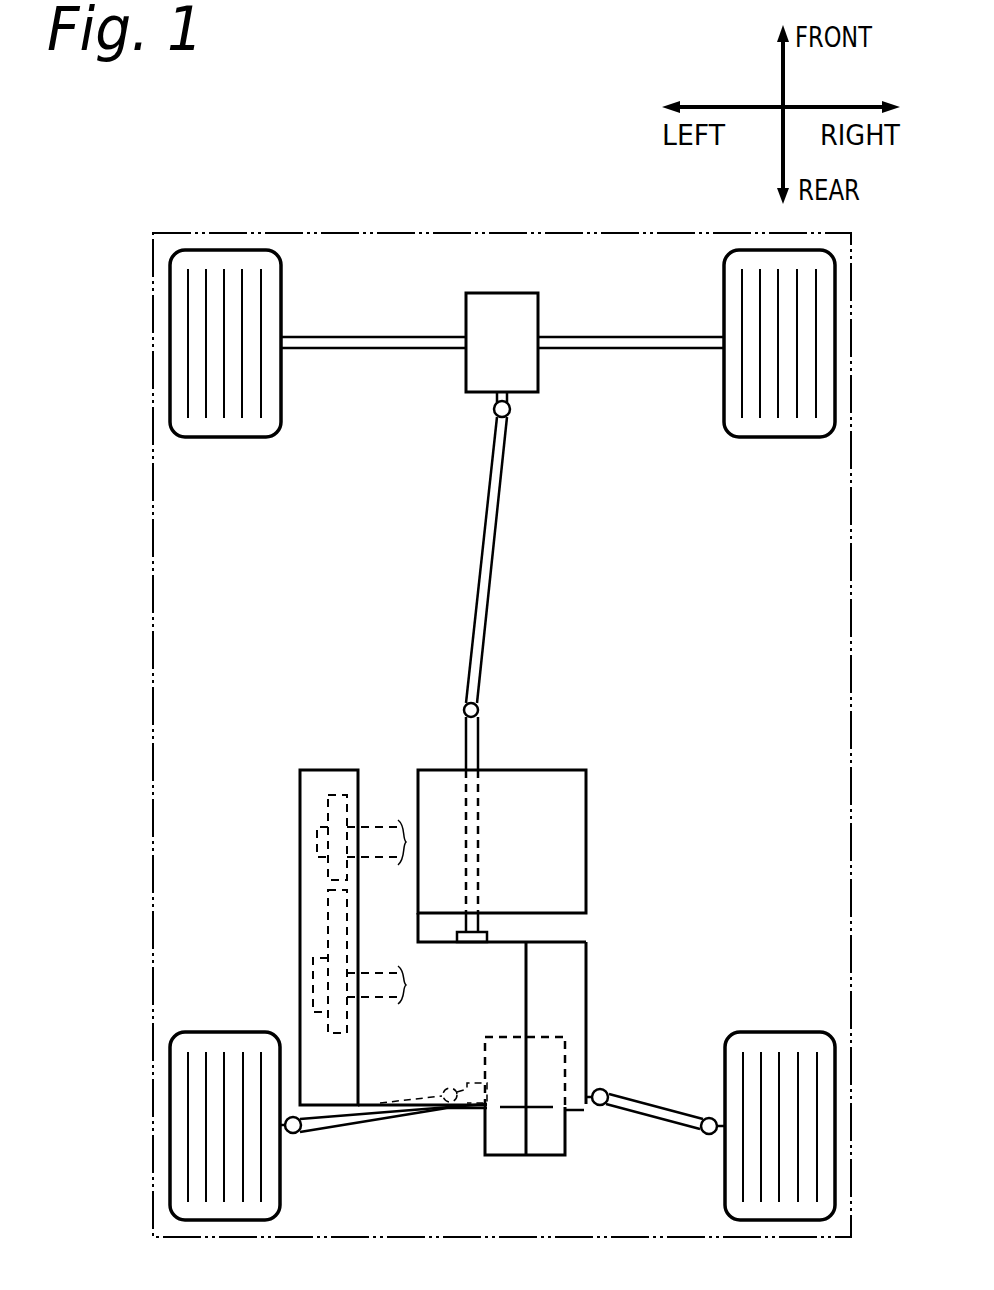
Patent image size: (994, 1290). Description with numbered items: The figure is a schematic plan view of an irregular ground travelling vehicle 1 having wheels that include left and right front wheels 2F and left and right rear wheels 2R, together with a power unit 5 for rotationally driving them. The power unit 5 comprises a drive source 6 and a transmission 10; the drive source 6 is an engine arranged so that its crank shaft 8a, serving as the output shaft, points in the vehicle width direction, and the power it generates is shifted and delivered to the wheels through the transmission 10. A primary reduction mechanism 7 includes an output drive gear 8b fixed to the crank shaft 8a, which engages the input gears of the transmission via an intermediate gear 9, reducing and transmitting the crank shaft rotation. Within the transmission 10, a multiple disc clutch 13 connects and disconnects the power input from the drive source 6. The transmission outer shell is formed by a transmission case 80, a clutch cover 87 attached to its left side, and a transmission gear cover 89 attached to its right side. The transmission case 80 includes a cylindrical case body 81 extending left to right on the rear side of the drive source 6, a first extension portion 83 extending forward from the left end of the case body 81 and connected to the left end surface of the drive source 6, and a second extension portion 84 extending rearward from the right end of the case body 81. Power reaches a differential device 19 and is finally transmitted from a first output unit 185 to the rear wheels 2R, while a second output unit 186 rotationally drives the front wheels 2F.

The irregular ground travelling vehicle 1 is at (458, 222).
The front wheels 2F is at (222, 437).
The rear wheels 2R is at (223, 1032).
The power unit 5 is at (557, 871).
The drive source 6 is at (553, 840).
The primary reduction mechanism 7 is at (298, 855).
The crank shaft 8a is at (388, 826).
The output drive gear 8b is at (338, 793).
The intermediate gear 9 is at (330, 913).
The transmission 10 is at (600, 972).
The multiple disc clutch 13 is at (320, 1030).
The differential device 19 is at (552, 1127).
The transmission case 80 is at (462, 1040).
The case body 81 is at (405, 1107).
The first extension portion 83 is at (412, 806).
The second extension portion 84 is at (505, 1148).
The clutch cover 87 is at (300, 947).
The transmission gear cover 89 is at (586, 992).
The first output unit 185 is at (482, 1110).
The second output unit 186 is at (488, 936).